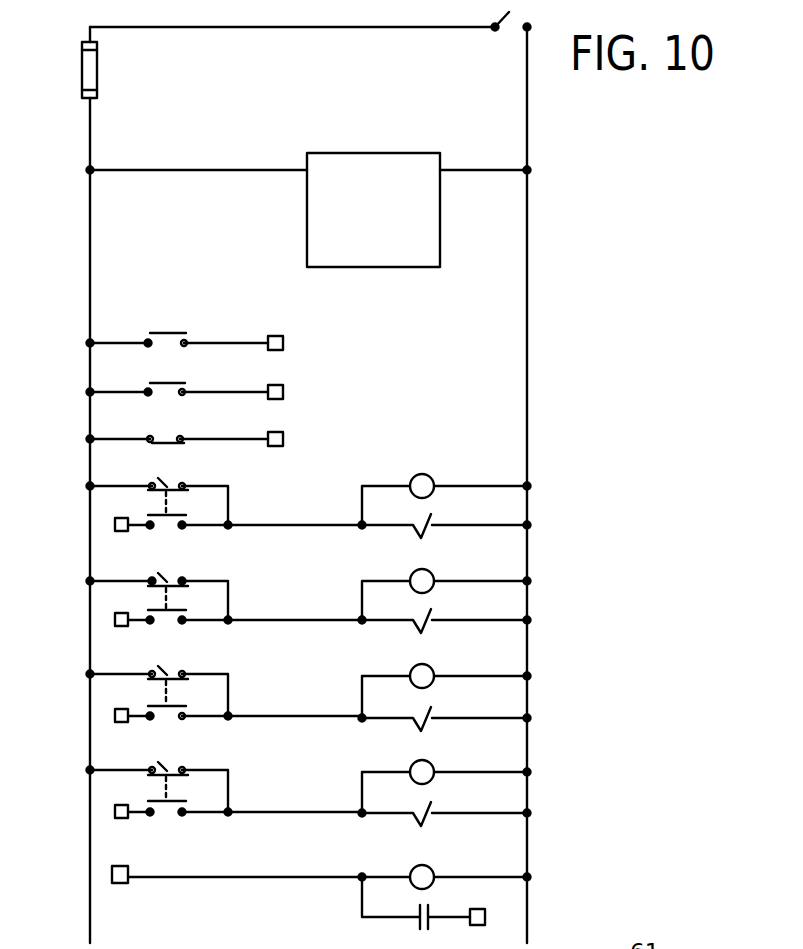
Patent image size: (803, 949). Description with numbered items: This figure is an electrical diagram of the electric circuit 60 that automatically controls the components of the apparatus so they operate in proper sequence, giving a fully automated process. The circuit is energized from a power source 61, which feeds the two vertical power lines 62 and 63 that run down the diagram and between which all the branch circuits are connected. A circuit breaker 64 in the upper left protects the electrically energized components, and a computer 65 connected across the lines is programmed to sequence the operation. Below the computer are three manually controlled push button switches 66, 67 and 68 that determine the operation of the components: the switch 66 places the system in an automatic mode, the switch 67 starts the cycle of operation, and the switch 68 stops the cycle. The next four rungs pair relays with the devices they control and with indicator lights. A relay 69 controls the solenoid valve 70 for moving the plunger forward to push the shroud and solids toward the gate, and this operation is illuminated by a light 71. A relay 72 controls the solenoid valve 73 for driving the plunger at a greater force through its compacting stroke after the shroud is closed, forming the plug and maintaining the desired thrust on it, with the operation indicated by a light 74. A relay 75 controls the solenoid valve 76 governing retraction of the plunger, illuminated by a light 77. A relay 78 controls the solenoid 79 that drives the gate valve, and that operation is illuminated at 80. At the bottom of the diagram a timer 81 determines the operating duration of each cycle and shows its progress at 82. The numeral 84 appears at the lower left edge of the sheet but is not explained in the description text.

The electric circuit 60 is at (404, 28).
The power source 61 is at (536, 4).
The power line 62 is at (90, 203).
The power line 63 is at (527, 224).
The circuit breaker 64 is at (97, 76).
The computer 65 is at (390, 221).
The push button switch 66 is at (153, 334).
The push button switch 67 is at (165, 381).
The push button switch 68 is at (165, 441).
The relay 69 is at (178, 486).
The solenoid valve 70 is at (443, 507).
The light 71 is at (424, 488).
The relay 72 is at (178, 581).
The solenoid valve 73 is at (431, 609).
The light 74 is at (424, 583).
The relay 75 is at (178, 674).
The solenoid valve 76 is at (431, 707).
The light 77 is at (424, 678).
The relay 78 is at (200, 770).
The solenoid 79 is at (431, 802).
The light 80 is at (424, 774).
The timer 81 is at (420, 929).
The progress indicator 82 is at (426, 878).
The terminal 84 is at (32, 944).